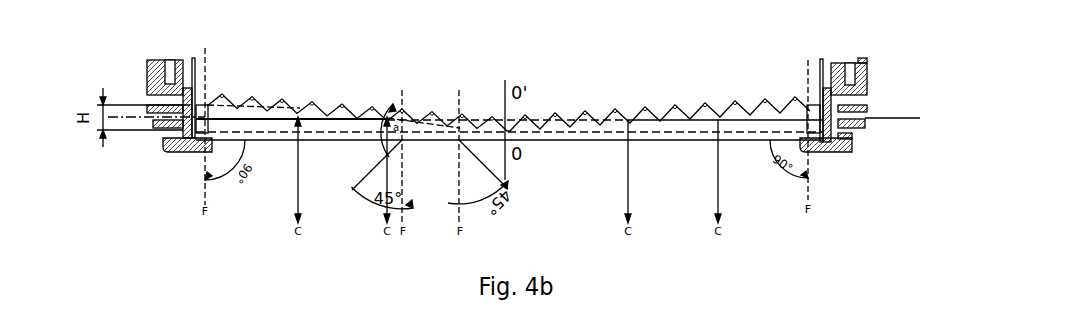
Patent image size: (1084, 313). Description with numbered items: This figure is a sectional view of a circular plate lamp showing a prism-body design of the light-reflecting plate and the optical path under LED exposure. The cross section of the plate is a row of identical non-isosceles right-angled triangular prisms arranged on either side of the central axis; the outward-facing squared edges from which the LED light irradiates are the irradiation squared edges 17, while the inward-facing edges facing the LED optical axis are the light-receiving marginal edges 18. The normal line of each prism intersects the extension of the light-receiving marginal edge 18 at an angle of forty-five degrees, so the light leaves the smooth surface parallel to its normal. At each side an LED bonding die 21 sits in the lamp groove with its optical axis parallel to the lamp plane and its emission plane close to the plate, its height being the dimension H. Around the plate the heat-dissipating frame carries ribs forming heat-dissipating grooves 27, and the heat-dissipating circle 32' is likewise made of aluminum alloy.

The irradiation squared edge 17 is at (209, 99).
The light-receiving marginal edge 18 is at (214, 100).
The LED bonding die 21 is at (186, 102).
The heat-dissipating groove 27 is at (182, 118).
The heat-dissipating circle 32' is at (879, 122).